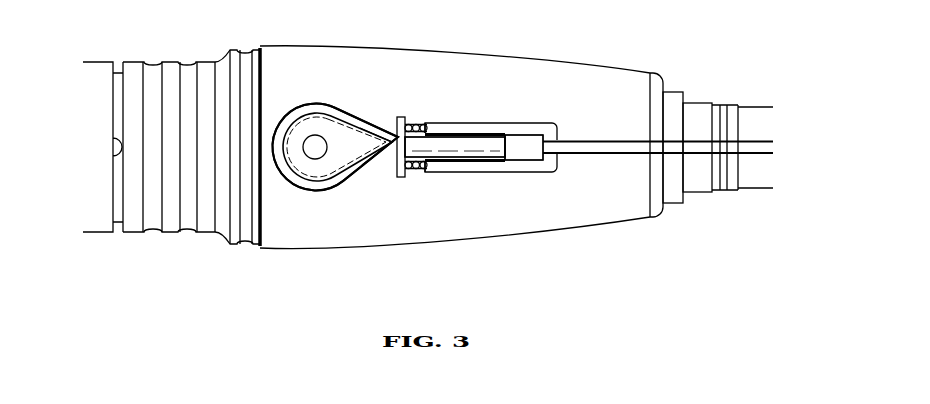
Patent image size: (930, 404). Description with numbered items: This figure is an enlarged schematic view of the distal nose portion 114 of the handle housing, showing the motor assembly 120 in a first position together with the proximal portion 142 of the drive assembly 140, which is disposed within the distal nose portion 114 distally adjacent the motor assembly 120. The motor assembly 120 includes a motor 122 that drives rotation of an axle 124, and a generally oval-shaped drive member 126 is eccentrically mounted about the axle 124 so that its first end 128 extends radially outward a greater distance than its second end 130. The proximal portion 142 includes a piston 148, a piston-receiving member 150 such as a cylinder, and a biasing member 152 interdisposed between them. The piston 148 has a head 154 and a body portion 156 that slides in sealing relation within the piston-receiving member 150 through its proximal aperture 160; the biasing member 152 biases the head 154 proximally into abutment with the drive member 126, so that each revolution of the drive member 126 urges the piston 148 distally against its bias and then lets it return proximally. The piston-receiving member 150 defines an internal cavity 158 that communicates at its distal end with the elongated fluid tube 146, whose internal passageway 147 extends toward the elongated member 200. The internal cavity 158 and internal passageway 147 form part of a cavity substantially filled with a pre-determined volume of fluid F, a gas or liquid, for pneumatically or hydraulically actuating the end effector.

The distal nose portion 114 is at (278, 237).
The motor assembly 120 is at (327, 98).
The motor 122 is at (300, 103).
The axle 124 is at (313, 150).
The drive member 126 is at (351, 108).
The first end 128 is at (390, 148).
The second end 130 is at (292, 153).
The drive assembly 140 is at (565, 107).
The proximal portion 142 is at (532, 112).
The elongated fluid tube 146 is at (698, 155).
The internal passageway 147 is at (620, 147).
The piston 148 is at (485, 147).
The piston-receiving member 150 is at (492, 167).
The biasing member 152 is at (415, 168).
The head 154 is at (398, 118).
The body portion 156 is at (445, 150).
The internal cavity 158 is at (528, 152).
The proximal aperture 160 is at (433, 133).
The elongated member 200 is at (748, 105).
The fluid F is at (506, 160).